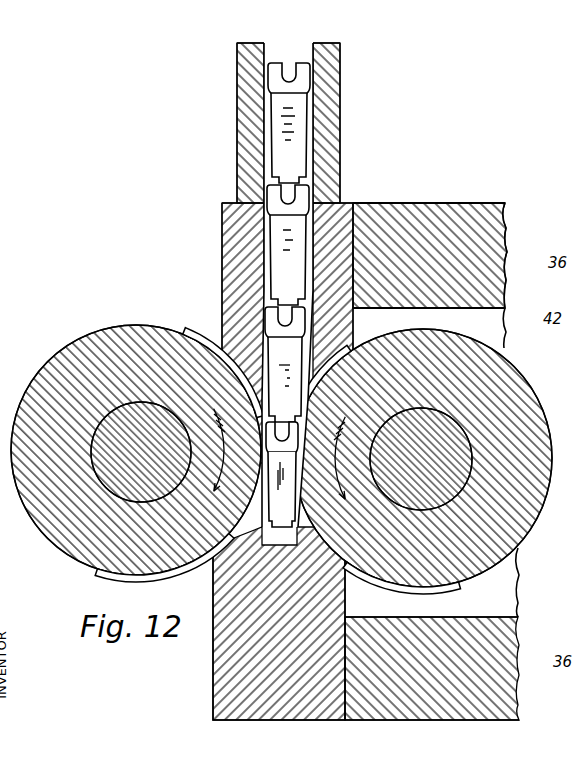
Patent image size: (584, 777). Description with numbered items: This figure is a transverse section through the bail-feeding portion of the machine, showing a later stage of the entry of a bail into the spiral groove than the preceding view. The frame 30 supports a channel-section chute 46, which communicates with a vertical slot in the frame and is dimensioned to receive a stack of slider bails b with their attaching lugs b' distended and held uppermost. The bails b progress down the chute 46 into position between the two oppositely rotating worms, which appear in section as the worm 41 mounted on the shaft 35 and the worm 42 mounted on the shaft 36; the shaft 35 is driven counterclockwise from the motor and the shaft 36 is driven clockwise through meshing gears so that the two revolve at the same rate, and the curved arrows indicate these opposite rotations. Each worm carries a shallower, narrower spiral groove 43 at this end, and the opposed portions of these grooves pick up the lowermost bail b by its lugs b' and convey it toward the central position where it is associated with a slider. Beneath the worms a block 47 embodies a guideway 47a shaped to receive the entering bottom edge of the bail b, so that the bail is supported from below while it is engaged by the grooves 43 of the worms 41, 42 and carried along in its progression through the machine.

The chute 46 is at (328, 88).
The slider bail b is at (315, 257).
The attaching lugs b' is at (249, 174).
The frame 30 is at (437, 222).
The spiral groove 43 is at (202, 343).
The worm 42 is at (83, 552).
The shaft 36 is at (128, 408).
The worm 41 is at (528, 496).
The shaft 35 is at (462, 455).
The guideway 47a is at (282, 474).
The block 47 is at (280, 705).